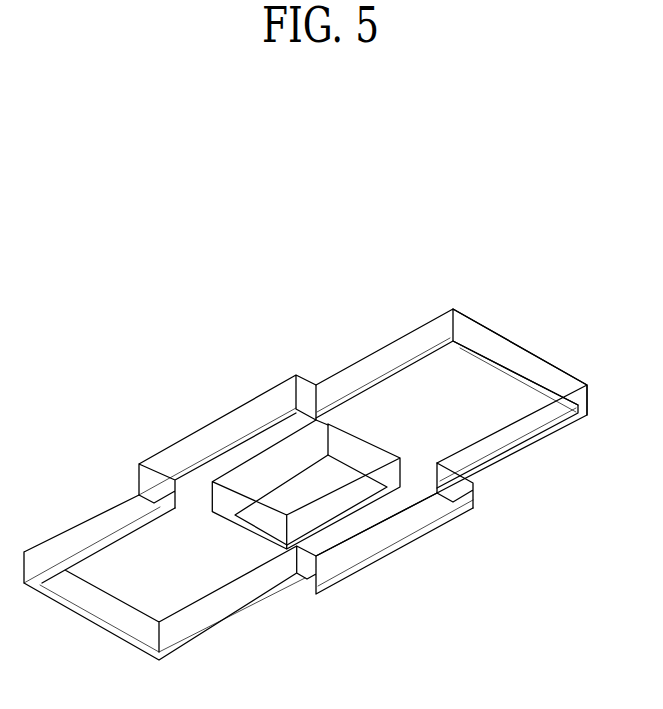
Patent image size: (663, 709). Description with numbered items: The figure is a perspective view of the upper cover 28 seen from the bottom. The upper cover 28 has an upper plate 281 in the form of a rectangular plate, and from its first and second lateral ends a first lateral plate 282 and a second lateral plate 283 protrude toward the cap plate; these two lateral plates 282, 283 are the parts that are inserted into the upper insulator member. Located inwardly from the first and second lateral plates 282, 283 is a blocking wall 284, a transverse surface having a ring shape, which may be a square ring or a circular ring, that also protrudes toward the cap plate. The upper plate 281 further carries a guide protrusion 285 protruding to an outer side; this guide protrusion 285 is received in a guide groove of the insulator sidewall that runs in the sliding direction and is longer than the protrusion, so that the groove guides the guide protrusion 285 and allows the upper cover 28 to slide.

The upper cover 28 is at (320, 483).
The upper plate 281 is at (468, 420).
The first lateral plate 282 is at (122, 618).
The second lateral plate 283 is at (547, 368).
The blocking wall 284 is at (330, 505).
The guide protrusion 285 is at (201, 428).